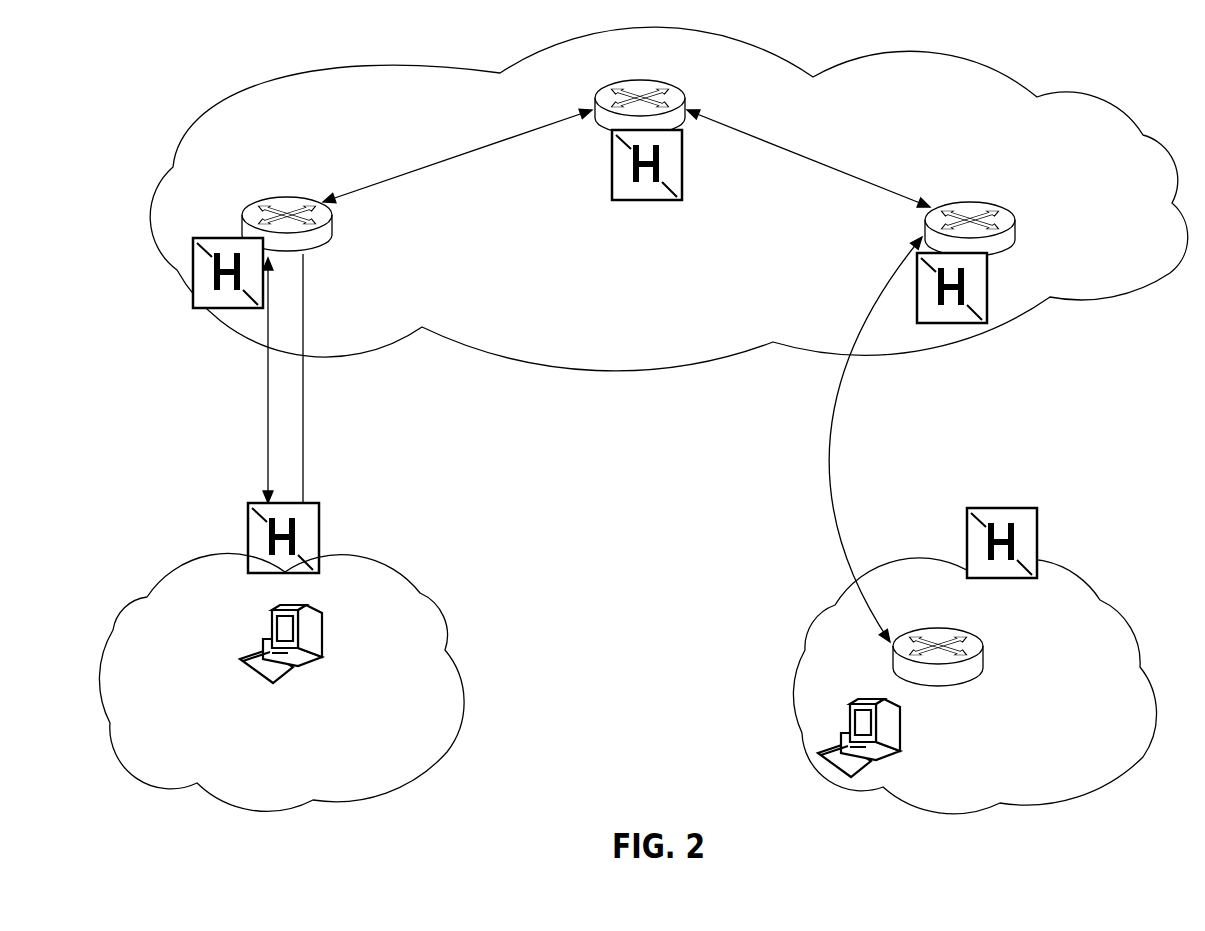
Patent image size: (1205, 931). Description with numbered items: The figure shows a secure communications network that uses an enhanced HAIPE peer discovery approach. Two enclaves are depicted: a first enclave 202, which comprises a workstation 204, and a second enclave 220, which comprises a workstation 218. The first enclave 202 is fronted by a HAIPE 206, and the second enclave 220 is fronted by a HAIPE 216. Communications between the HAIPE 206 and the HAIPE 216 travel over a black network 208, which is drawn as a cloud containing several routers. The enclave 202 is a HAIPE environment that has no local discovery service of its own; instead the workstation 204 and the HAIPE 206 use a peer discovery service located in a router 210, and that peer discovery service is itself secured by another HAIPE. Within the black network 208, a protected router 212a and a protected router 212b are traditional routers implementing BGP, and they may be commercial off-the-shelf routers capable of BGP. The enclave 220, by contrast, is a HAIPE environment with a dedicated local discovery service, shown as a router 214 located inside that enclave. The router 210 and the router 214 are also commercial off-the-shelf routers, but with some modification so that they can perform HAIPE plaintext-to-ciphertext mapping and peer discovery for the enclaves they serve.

The enclave 202 is at (281, 696).
The workstation 204 is at (283, 662).
The HAIPE 206 is at (335, 538).
The black network 208 is at (669, 199).
The router 210 is at (349, 224).
The protected router 212a is at (708, 107).
The protected router 212b is at (1041, 229).
The router 214 is at (1005, 657).
The HAIPE 216 is at (1053, 543).
The workstation 218 is at (952, 738).
The enclave 220 is at (974, 701).